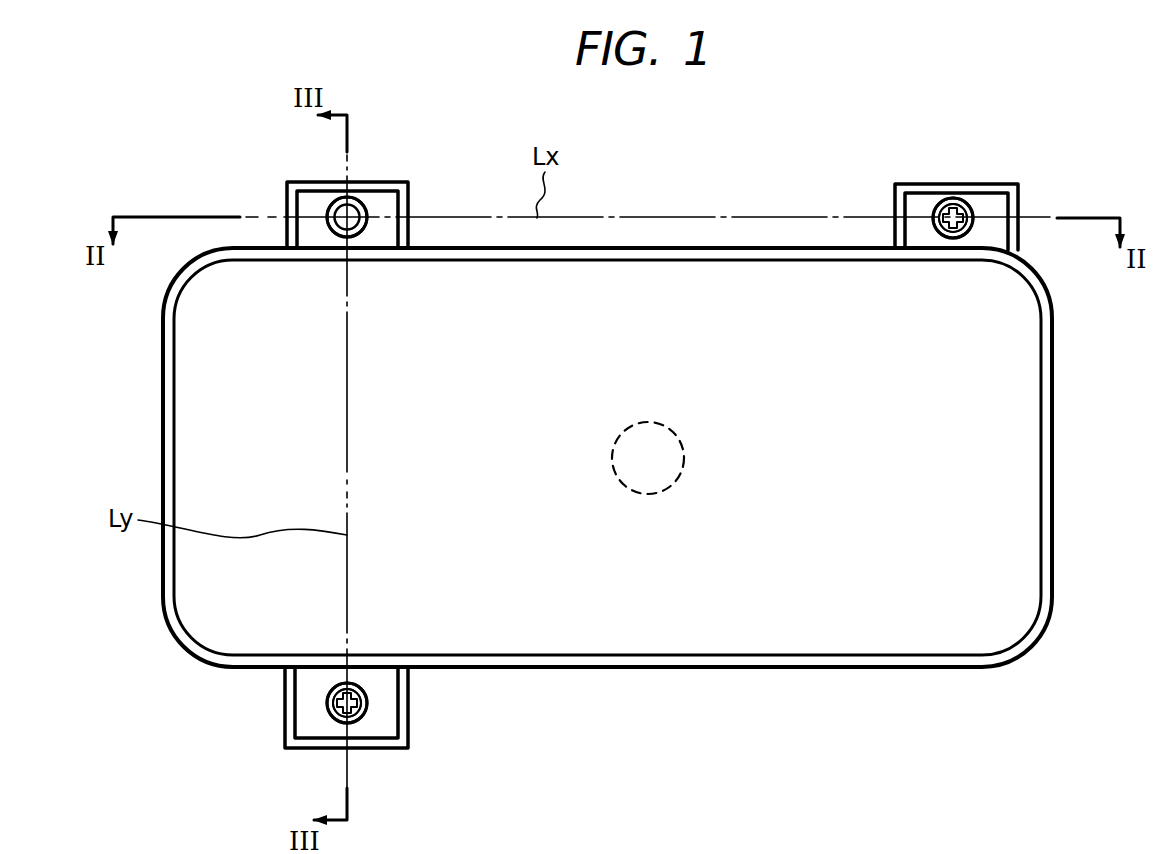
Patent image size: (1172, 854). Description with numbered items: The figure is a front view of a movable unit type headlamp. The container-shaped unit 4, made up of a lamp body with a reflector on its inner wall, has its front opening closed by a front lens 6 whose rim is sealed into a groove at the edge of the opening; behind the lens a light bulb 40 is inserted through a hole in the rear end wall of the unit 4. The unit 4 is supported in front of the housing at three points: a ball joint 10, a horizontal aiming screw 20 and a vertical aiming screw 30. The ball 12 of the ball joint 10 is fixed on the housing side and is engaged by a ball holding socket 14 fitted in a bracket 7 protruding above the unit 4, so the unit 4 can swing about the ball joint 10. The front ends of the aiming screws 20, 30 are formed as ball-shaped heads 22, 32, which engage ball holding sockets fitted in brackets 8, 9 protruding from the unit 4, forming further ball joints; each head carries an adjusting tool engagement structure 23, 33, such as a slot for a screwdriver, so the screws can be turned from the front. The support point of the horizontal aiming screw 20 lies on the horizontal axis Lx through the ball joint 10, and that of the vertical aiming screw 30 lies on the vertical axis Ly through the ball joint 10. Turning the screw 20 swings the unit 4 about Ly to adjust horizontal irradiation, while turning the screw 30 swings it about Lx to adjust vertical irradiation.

The unit 4 is at (630, 246).
The front lens 6 is at (948, 613).
The bracket 7 is at (408, 182).
The bracket 8 is at (925, 184).
The bracket 9 is at (408, 717).
The ball joint 10 is at (315, 208).
The ball 12 is at (363, 205).
The ball holding socket 14 is at (328, 207).
The horizontal aiming screw 20 is at (988, 208).
The ball-shaped head 22 is at (937, 210).
The screw 23 is at (963, 210).
The vertical aiming screw 30 is at (367, 720).
The ball-shaped head 32 is at (332, 720).
The screw 33 is at (330, 712).
The light bulb 40 is at (673, 483).